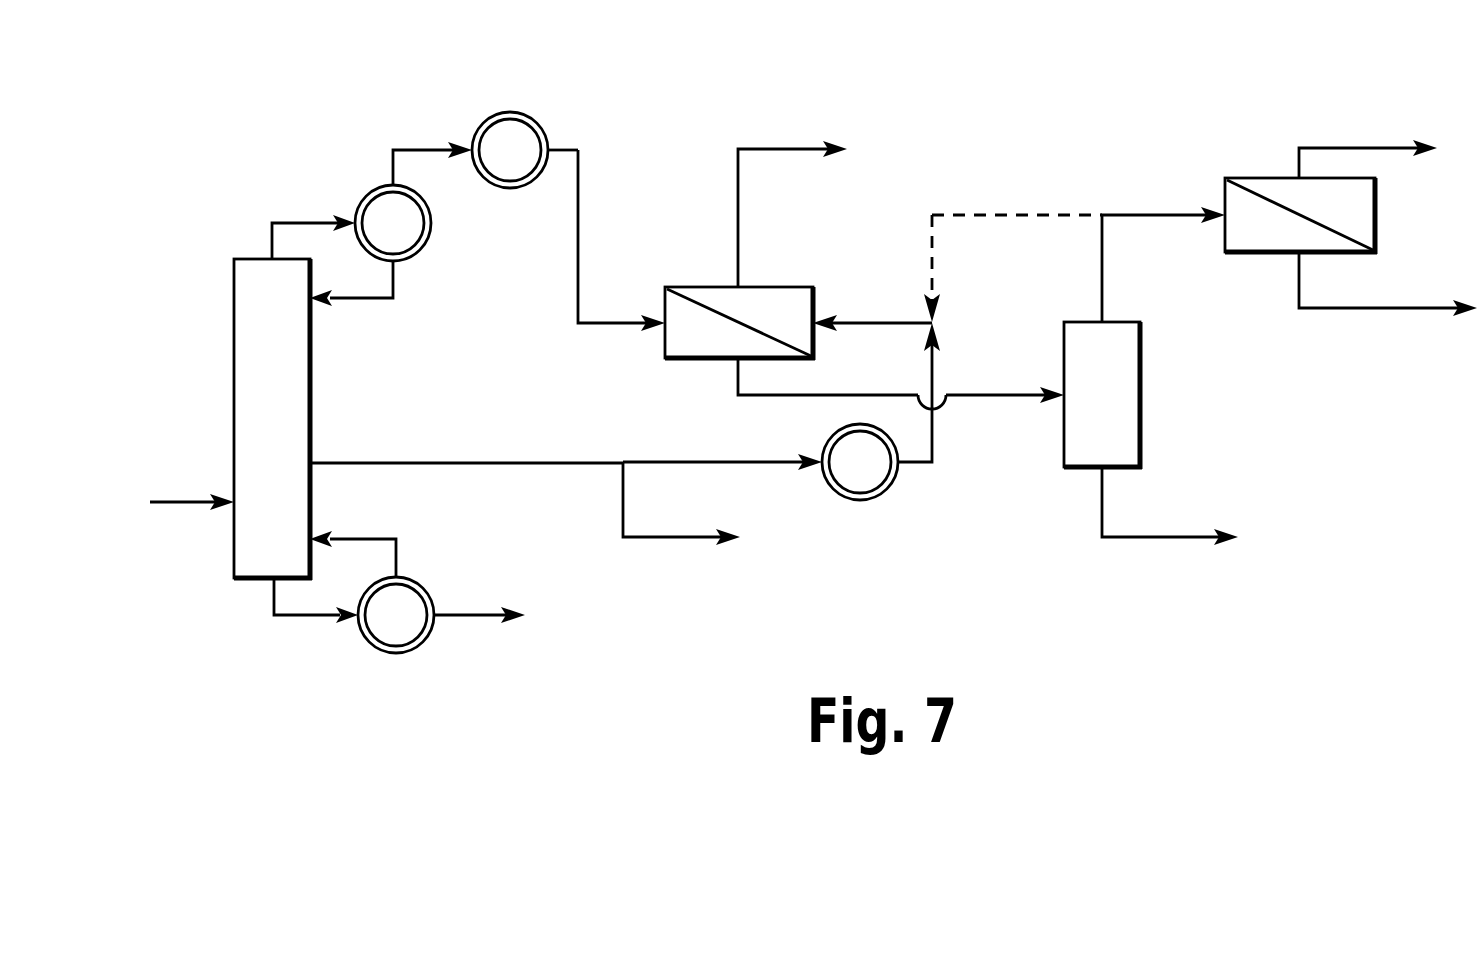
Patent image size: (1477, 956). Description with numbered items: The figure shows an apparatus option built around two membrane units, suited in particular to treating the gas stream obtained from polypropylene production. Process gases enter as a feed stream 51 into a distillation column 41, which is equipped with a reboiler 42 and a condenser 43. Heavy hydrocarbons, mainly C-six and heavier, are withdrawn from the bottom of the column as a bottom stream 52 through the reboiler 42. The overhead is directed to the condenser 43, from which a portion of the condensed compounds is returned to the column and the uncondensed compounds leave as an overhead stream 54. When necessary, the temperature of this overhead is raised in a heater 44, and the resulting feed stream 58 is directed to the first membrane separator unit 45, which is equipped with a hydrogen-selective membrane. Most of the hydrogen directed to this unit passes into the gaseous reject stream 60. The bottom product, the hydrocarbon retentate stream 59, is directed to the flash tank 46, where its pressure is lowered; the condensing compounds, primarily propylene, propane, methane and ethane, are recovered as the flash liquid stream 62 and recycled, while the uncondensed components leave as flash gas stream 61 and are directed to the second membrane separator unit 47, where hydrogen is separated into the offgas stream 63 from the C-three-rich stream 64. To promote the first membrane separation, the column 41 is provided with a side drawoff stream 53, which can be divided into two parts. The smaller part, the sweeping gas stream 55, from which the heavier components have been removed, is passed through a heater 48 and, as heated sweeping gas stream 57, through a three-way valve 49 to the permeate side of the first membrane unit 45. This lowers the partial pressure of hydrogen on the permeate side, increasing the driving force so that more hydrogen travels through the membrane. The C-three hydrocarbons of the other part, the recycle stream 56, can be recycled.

The distillation column 41 is at (288, 370).
The reboiler 42 is at (396, 653).
The condenser 43 is at (431, 223).
The heater 44 is at (510, 112).
The first membrane separator unit 45 is at (691, 287).
The flash tank 46 is at (1140, 364).
The second membrane separator unit 47 is at (1242, 178).
The heater 48 is at (860, 500).
The three-way valve 49 is at (936, 312).
The feed stream 51 is at (192, 487).
The bottom stream 52 is at (479, 601).
The side drawoff stream 53 is at (466, 445).
The overhead stream 54 is at (432, 149).
The sweeping gas stream 55 is at (722, 448).
The C3 recycle stream 56 is at (681, 503).
The heated sweeping gas stream 57 is at (936, 393).
The first membrane unit feed stream 58 is at (621, 240).
The hydrocarbon retentate stream 59 is at (901, 362).
The gaseous reject stream 60 is at (792, 199).
The flash gas stream 61 is at (1163, 251).
The flash liquid stream 62 is at (1170, 506).
The offgas stream 63 is at (1388, 284).
The second membrane unit C3 stream 64 is at (1368, 144).